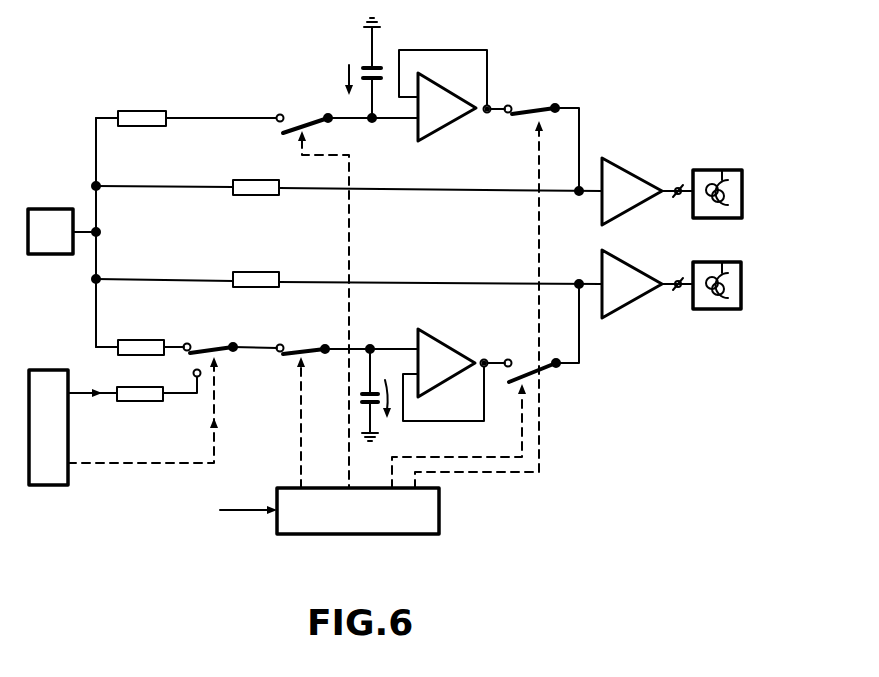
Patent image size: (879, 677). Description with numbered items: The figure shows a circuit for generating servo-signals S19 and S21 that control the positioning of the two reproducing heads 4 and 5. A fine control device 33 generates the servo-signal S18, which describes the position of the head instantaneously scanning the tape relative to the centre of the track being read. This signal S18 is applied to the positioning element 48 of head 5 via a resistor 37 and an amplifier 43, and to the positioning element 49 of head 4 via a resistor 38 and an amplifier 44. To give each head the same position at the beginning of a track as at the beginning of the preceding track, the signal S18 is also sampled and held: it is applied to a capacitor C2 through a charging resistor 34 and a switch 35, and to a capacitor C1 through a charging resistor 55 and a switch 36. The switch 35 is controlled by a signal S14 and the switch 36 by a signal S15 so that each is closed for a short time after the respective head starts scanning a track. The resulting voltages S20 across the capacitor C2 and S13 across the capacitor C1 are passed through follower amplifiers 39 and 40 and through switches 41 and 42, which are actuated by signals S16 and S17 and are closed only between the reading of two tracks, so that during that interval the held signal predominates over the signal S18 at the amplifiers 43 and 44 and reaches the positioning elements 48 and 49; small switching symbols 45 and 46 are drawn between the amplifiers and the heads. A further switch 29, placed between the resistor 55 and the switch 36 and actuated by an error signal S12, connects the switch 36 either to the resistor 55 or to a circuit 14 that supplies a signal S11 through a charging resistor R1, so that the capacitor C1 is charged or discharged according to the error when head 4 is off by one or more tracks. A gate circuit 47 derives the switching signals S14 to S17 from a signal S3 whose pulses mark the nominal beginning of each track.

The fine control device 33 is at (52, 209).
The servo-signal S18 is at (80, 238).
The charging resistor 34 is at (142, 111).
The switch 35 is at (302, 112).
The control signal S14 is at (301, 150).
The capacitor signal S20 is at (347, 70).
The capacitor C2 is at (366, 64).
The follower amplifier 39 is at (448, 98).
The switch 41 is at (535, 108).
The control signal S16 is at (537, 142).
The resistor 37 is at (272, 196).
The amplifier 43 is at (625, 170).
The switch 45 is at (683, 198).
The servo-signal S21 is at (669, 185).
The head 5 is at (726, 176).
The positioning element 48 is at (727, 218).
The resistor 38 is at (243, 278).
The amplifier 44 is at (625, 268).
The switch 46 is at (683, 291).
The servo-signal S19 is at (668, 281).
The head 4 is at (726, 270).
The positioning element 49 is at (728, 310).
The charging resistor 55 is at (147, 335).
The switch 29 is at (202, 345).
The switch 36 is at (311, 349).
The control signal S15 is at (300, 378).
The capacitor C1 is at (364, 396).
The capacitor signal S13 is at (389, 416).
The follower amplifier 40 is at (448, 352).
The switch 42 is at (535, 372).
The control signal S17 is at (520, 408).
The circuit 14 is at (52, 370).
The signal S11 is at (86, 395).
The charging resistor R1 is at (148, 401).
The error signal S12 is at (216, 440).
The gate circuit 47 is at (377, 534).
The track-start pulse signal S3 is at (250, 513).